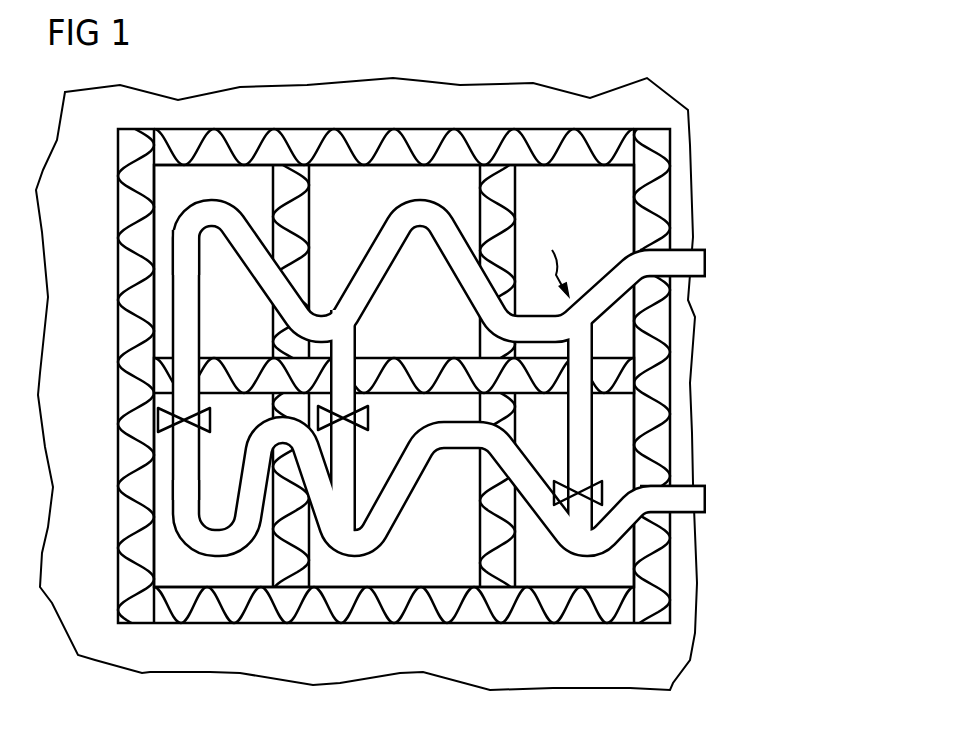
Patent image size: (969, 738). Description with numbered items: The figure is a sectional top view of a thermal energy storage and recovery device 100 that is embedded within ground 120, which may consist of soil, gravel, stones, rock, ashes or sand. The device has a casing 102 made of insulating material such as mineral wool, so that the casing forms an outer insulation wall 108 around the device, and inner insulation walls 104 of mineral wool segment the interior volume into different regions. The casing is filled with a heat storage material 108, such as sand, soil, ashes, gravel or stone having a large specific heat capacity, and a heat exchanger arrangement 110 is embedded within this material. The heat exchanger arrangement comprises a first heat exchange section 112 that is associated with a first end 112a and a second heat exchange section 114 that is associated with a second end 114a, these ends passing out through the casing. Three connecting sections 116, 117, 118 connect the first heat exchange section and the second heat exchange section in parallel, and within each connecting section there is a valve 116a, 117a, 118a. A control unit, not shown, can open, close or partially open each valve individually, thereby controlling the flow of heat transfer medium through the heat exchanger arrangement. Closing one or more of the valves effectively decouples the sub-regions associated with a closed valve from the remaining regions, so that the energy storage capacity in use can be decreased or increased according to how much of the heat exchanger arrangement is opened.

The thermal energy storage and recovery device 100 is at (712, 95).
The casing 102 is at (672, 183).
The inner insulation walls 104 is at (313, 217).
The heat storage material 108 is at (600, 212).
The heat exchanger arrangement 110 is at (551, 256).
The first heat exchange section 112 is at (418, 212).
The first end 112a is at (706, 262).
The second heat exchange section 114 is at (383, 545).
The second end 114a is at (706, 498).
The connecting section 116 is at (581, 413).
The valve 116a is at (580, 503).
The connecting section 117 is at (347, 350).
The valve 117a is at (368, 406).
The connecting section 118 is at (192, 332).
The valve 118a is at (158, 420).
The ground 120 is at (672, 663).